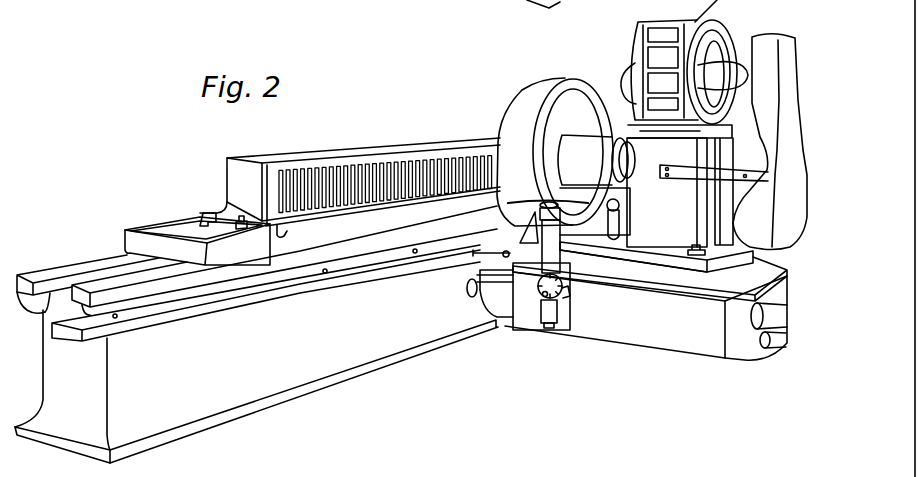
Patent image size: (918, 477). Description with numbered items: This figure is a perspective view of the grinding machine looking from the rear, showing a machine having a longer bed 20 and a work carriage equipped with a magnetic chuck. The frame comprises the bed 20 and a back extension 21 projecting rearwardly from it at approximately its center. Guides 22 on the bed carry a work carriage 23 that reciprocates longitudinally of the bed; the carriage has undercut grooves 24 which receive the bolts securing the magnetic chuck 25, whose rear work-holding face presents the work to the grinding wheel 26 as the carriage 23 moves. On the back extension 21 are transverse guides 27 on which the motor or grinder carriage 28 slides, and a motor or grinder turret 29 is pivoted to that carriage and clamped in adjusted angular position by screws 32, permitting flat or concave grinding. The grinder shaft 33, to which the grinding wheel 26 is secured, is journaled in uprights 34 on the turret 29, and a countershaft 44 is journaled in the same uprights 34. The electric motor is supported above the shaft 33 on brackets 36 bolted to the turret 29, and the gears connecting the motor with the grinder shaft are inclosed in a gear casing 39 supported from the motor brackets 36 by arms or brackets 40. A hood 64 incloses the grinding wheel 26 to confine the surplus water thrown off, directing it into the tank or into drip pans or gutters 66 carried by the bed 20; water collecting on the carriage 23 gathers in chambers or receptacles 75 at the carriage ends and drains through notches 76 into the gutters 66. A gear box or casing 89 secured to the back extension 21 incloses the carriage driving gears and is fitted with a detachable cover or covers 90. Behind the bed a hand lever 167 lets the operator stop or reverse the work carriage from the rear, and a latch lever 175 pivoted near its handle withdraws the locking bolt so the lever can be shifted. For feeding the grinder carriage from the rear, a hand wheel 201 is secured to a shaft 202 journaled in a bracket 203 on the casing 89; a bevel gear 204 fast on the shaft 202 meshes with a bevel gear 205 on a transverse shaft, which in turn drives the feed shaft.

The bed 20 is at (352, 350).
The back extension 21 is at (528, 331).
The guides 22 is at (63, 272).
The work carriage 23 is at (352, 230).
The undercut grooves 24 is at (242, 229).
The magnetic chuck 25 is at (372, 160).
The grinding wheel 26 is at (572, 95).
The guides 27 is at (756, 262).
The motor or grinder carriage 28 is at (666, 268).
The motor or grinder turret 29 is at (648, 252).
The screws 32 is at (692, 249).
The grinder shaft 33 is at (620, 137).
The uprights 34 is at (552, 237).
The brackets 36 is at (650, 172).
The gear casing 39 is at (773, 43).
The arms or brackets 40 is at (742, 183).
The countershaft 44 is at (613, 212).
The hood 64 is at (528, 93).
The drip pans or gutters 66 is at (68, 335).
The chambers or receptacles 75 is at (190, 233).
The notches 76 is at (284, 232).
The gear box or casing 89 is at (690, 338).
The cover or covers 90 is at (727, 302).
The hand lever 167 is at (480, 258).
The latch lever 175 is at (470, 276).
The hand wheel 201 is at (528, 194).
The shaft 202 is at (540, 294).
The bracket 203 is at (568, 297).
The bevel gear 204 is at (547, 300).
The bevel gear 205 is at (558, 312).